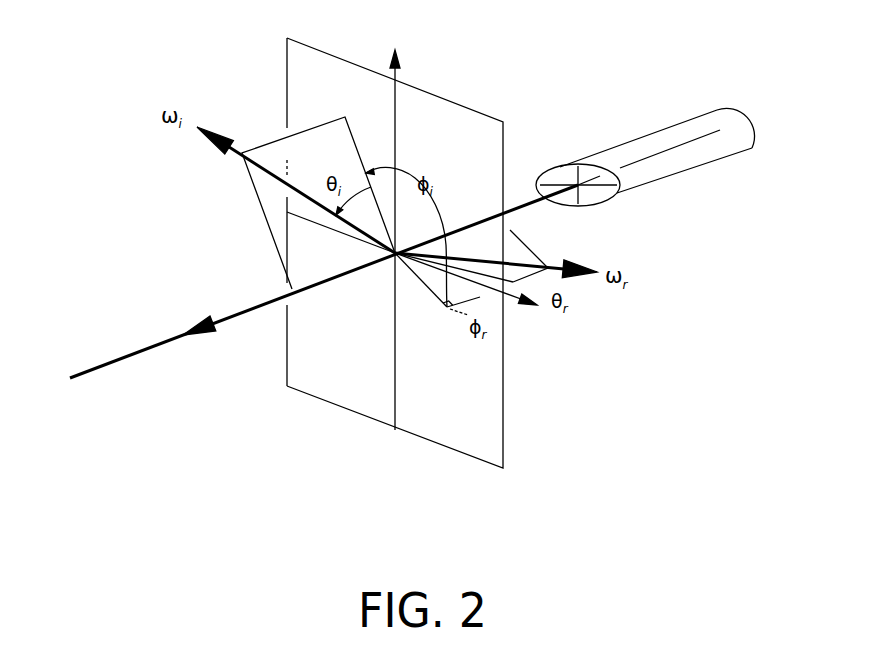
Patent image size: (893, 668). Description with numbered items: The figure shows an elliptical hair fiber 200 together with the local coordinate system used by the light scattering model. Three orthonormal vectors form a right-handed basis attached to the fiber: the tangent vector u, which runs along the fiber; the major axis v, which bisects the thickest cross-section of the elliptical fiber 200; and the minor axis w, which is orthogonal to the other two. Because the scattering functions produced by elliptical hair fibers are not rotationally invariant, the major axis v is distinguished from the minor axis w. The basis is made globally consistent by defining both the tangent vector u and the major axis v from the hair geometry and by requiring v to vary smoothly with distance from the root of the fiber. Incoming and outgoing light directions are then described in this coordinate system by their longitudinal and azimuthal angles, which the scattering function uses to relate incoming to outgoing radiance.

The elliptical hair fiber 200 is at (718, 113).
The tangent vector u is at (324, 281).
The major axis v is at (468, 294).
The minor axis w is at (403, 235).